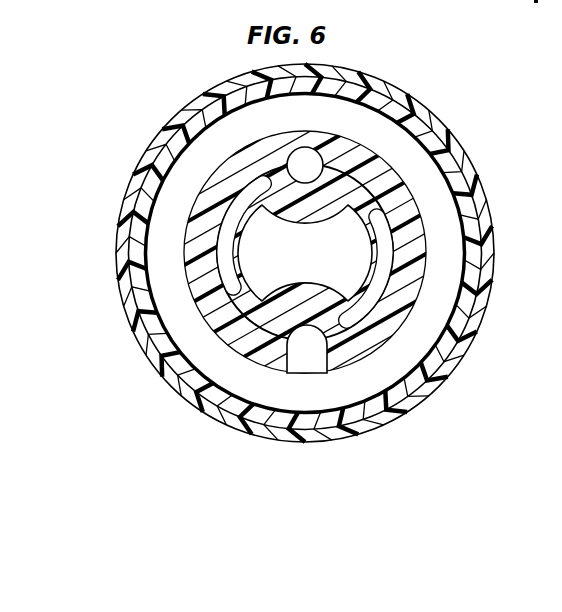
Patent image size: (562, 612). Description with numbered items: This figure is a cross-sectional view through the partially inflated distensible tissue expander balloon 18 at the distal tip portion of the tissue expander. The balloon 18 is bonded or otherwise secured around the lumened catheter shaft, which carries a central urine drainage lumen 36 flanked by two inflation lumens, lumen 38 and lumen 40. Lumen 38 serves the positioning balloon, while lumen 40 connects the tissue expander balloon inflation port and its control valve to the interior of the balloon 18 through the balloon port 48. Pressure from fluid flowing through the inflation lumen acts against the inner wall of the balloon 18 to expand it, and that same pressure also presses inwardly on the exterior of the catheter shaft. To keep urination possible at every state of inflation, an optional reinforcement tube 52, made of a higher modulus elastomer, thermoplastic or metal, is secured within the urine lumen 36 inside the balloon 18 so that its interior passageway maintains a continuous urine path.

The distensible tissue expander balloon 18 is at (467, 183).
The central urine drainage lumen 36 is at (309, 265).
The lumen 38 is at (310, 175).
The lumen 40 is at (312, 365).
The balloon port 48 is at (285, 367).
The reinforcement tube 52 is at (250, 238).